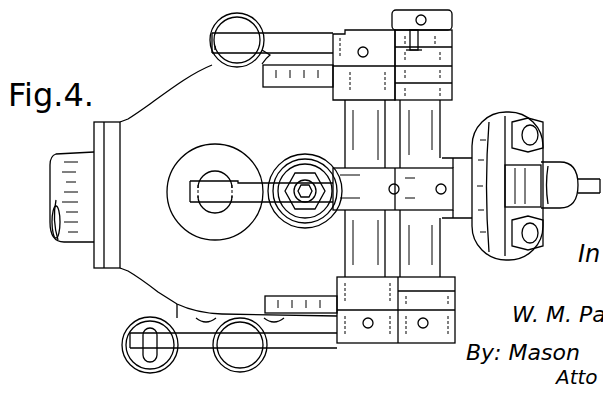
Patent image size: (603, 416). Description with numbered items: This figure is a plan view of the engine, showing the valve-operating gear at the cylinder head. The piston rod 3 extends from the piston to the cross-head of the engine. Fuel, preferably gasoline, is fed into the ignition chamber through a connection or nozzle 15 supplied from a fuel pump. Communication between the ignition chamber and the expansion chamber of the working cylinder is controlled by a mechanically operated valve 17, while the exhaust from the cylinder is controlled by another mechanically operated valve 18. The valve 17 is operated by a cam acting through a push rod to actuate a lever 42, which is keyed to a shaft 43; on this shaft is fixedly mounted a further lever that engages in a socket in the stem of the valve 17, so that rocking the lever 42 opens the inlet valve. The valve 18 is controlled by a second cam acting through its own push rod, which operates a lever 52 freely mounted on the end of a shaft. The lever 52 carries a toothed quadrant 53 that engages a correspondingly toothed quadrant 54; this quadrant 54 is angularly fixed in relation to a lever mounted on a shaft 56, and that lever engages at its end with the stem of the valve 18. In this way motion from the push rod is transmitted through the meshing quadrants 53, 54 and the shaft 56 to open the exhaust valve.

The piston rod 3 is at (212, 1).
The lever 52 is at (284, 42).
The toothed quadrant 53 is at (432, 38).
The toothed quadrant 54 is at (405, 42).
The shaft 56 is at (352, 240).
The mechanically operated valve 18 is at (216, 176).
The mechanically operated valve 17 is at (305, 172).
The connection or nozzle 15 is at (541, 167).
The shaft 43 is at (448, 252).
The lever 42 is at (308, 346).